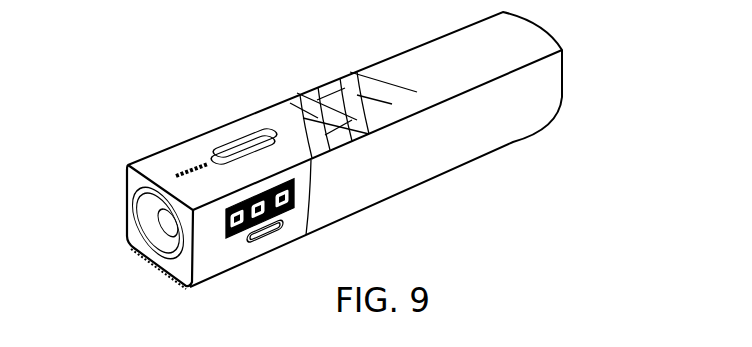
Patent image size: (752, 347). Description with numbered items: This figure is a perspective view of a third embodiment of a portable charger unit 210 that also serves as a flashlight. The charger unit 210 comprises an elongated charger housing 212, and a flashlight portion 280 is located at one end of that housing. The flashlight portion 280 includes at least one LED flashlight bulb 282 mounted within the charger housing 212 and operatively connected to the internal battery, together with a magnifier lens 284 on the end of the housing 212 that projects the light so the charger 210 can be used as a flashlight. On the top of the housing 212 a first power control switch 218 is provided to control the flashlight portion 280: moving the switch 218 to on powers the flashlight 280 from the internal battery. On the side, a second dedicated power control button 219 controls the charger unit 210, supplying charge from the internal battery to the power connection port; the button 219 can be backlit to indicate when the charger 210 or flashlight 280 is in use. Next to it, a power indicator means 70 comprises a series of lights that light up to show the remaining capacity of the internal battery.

The portable charger unit 210 is at (310, 65).
The charger housing 212 is at (527, 97).
The first power control switch 218 is at (243, 142).
The second dedicated power control button 219 is at (253, 243).
The power indicator means 70 is at (231, 243).
The flashlight portion 280 is at (123, 239).
The flashlight bulb 282 is at (150, 217).
The magnifier lens 284 is at (165, 247).